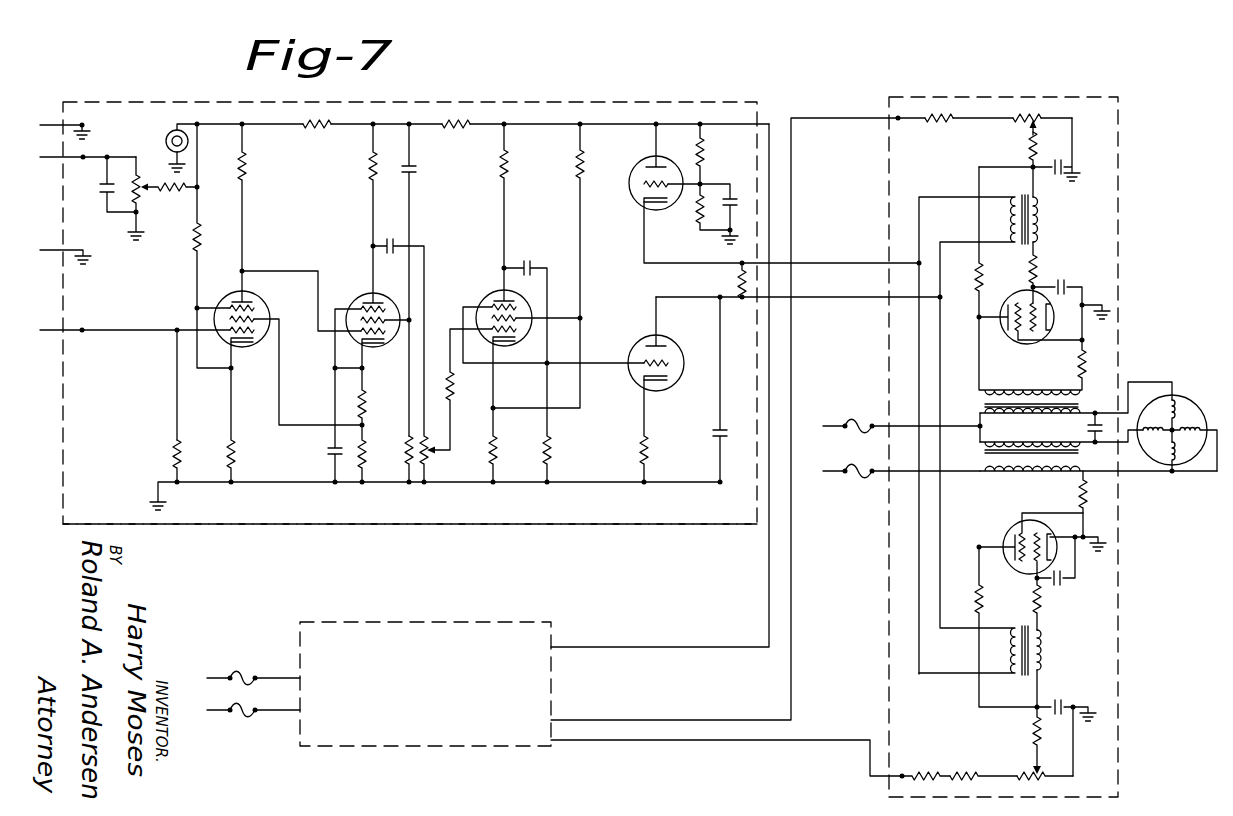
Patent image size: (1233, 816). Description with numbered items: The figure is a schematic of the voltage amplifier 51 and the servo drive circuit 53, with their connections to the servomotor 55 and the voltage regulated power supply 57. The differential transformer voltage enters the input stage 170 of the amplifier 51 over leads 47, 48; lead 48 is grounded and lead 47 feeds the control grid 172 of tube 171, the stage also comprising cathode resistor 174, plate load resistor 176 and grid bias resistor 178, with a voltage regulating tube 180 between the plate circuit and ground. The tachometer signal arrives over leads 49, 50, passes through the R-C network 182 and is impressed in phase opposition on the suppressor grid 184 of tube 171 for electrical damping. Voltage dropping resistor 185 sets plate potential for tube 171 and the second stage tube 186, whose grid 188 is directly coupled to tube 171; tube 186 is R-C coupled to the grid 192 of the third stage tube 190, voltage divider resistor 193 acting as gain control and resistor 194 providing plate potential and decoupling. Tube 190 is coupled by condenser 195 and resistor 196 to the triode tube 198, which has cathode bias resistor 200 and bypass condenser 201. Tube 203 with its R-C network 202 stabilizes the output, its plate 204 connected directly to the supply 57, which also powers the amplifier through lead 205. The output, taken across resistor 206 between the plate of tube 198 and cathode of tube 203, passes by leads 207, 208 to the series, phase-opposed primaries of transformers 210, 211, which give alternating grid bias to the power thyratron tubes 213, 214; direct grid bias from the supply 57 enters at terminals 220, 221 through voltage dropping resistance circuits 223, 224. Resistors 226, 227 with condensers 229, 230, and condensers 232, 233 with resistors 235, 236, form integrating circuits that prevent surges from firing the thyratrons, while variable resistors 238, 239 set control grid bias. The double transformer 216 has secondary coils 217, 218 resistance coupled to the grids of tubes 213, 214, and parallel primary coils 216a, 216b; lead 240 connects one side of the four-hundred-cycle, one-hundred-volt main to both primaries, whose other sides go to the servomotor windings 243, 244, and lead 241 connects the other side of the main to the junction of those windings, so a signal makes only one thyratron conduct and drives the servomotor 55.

The lead 47 is at (54, 337).
The lead 48 is at (48, 261).
The lead 49 is at (72, 158).
The lead 50 is at (46, 120).
The voltage amplifier 51 is at (500, 526).
The servo drive circuit 53 is at (918, 99).
The servomotor 55 is at (1197, 455).
The voltage regulated power supply 57 is at (502, 628).
The input stage 170 is at (171, 341).
The tube 171 is at (260, 304).
The control grid 172 is at (203, 322).
The resistor 174 is at (240, 457).
The plate load resistor 176 is at (248, 173).
The grid bias resistor 178 is at (182, 446).
The voltage regulating tube 180 is at (165, 138).
The R-C network 182 is at (118, 195).
The suppressor grid 184 is at (200, 307).
The voltage dropping resistor 185 is at (320, 125).
The second stage tube 186 is at (366, 295).
The grid 188 is at (348, 342).
The third stage tube 190 is at (484, 302).
The grid 192 is at (525, 345).
The voltage divider resistor 193 is at (435, 458).
The resistor 194 is at (456, 134).
The condenser 195 is at (522, 262).
The resistor 196 is at (553, 454).
The triode tube 198 is at (624, 375).
The resistor 200 is at (647, 458).
The condenser 201 is at (710, 433).
The R-C network 202 is at (703, 219).
The tube 203 is at (632, 204).
The plate 204 is at (636, 166).
The lead 205 is at (742, 603).
The resistor 206 is at (726, 284).
The lead 207 is at (852, 297).
The lead 208 is at (852, 264).
The transformer 210 is at (1020, 197).
The transformer 211 is at (1023, 678).
The thyratron tube 213 is at (1020, 338).
The thyratron tube 214 is at (1010, 525).
The double transformer 216 is at (980, 443).
The primary coil 216a is at (1049, 422).
The primary coil 216b is at (1076, 446).
The secondary coil 217 is at (1010, 396).
The secondary coil 218 is at (1054, 472).
The terminal 220 is at (884, 120).
The terminal 221 is at (903, 756).
The voltage dropping resistance circuit 223 is at (943, 116).
The voltage dropping resistance circuit 224 is at (952, 766).
The resistor 226 is at (1042, 280).
The resistor 227 is at (982, 604).
The condenser 229 is at (1066, 286).
The condenser 230 is at (1057, 586).
The condenser 232 is at (1054, 186).
The condenser 233 is at (1056, 703).
The resistor 235 is at (1019, 152).
The resistor 236 is at (1019, 728).
The variable resistor 238 is at (1038, 116).
The variable resistor 239 is at (1018, 782).
The lead 240 is at (822, 418).
The lead 241 is at (832, 485).
The servomotor winding 243 is at (1164, 446).
The servomotor winding 244 is at (1178, 406).